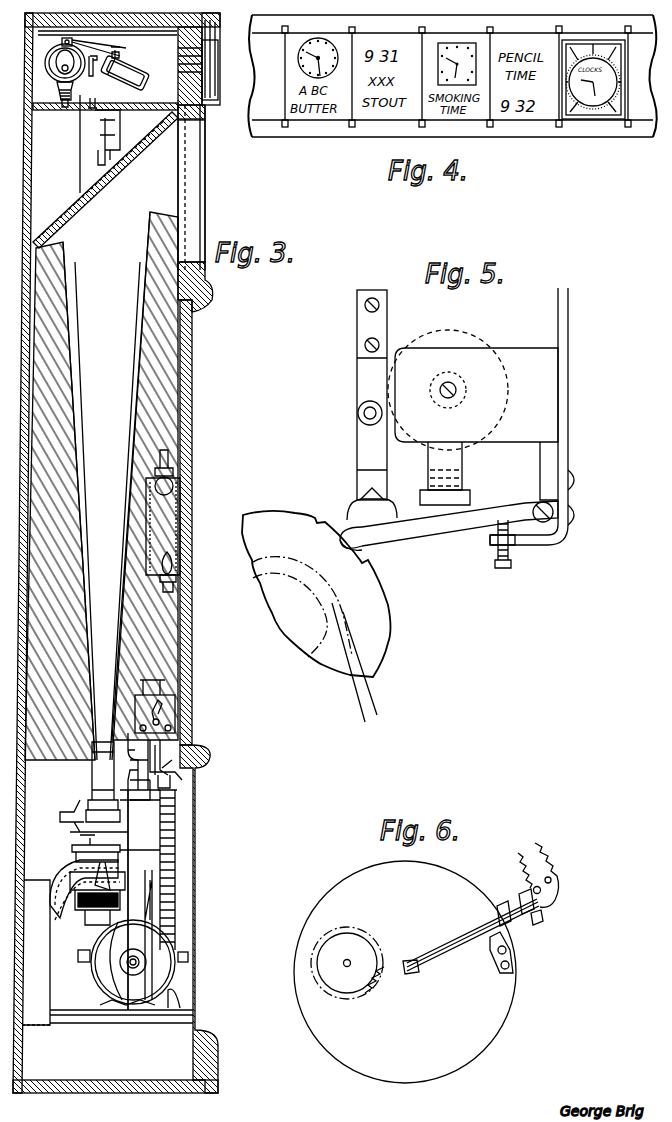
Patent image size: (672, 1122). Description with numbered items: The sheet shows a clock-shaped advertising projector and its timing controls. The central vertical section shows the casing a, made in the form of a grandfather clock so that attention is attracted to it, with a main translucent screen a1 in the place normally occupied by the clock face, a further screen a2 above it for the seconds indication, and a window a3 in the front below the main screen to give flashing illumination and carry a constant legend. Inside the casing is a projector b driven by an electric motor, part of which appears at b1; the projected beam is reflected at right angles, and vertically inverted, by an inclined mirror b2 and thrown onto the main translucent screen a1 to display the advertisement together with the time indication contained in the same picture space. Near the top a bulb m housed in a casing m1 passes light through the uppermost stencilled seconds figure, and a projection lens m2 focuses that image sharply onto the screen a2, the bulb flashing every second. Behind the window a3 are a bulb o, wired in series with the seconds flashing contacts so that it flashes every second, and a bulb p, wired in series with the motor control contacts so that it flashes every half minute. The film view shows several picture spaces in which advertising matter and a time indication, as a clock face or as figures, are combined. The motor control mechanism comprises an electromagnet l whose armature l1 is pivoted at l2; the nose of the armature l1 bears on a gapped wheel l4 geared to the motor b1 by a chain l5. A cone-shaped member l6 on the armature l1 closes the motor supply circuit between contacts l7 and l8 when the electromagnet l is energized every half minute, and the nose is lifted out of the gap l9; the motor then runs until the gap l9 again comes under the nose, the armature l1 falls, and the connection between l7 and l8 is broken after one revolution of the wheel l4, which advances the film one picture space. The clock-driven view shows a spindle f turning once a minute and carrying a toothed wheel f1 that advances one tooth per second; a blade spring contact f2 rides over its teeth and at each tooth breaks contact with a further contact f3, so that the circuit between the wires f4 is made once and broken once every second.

In FIG. 3, the casing a is at (178, 357).
In FIG. 3, the main translucent screen a1 is at (180, 200).
In FIG. 3, the further screen a2 is at (206, 100).
In FIG. 3, the window a3 is at (182, 528).
In FIG. 3, the bulb m is at (119, 61).
In FIG. 3, the casing m1 is at (52, 78).
In FIG. 3, the projection lens m2 is at (122, 86).
In FIG. 3, the projector b is at (125, 802).
In FIG. 3, the electric motor b1 is at (158, 948).
In FIG. 3, the inclined mirror b2 is at (80, 205).
In FIG. 3, the bulb o is at (170, 487).
In FIG. 3, the bulb p is at (170, 562).
In FIG. 5, the electromagnet l is at (456, 350).
In FIG. 5, the armature l1 is at (478, 515).
In FIG. 5, the pivot l2 is at (543, 525).
In FIG. 5, the gapped wheel l4 is at (388, 617).
In FIG. 3, the chain l5 is at (170, 870).
In FIG. 5, the chain l5 is at (368, 692).
In FIG. 5, the cone-shaped member l6 is at (360, 504).
In FIG. 3, the contact l7 is at (172, 772).
In FIG. 5, the contact l7 is at (365, 470).
In FIG. 3, the contact l8 is at (170, 760).
In FIG. 5, the contact l8 is at (358, 415).
In FIG. 5, the gap l9 is at (362, 548).
In FIG. 6, the spindle f is at (348, 968).
In FIG. 6, the toothed wheel f1 is at (360, 930).
In FIG. 6, the blade spring contact f2 is at (392, 978).
In FIG. 6, the contact f3 is at (458, 942).
In FIG. 6, the wires f4 is at (535, 843).